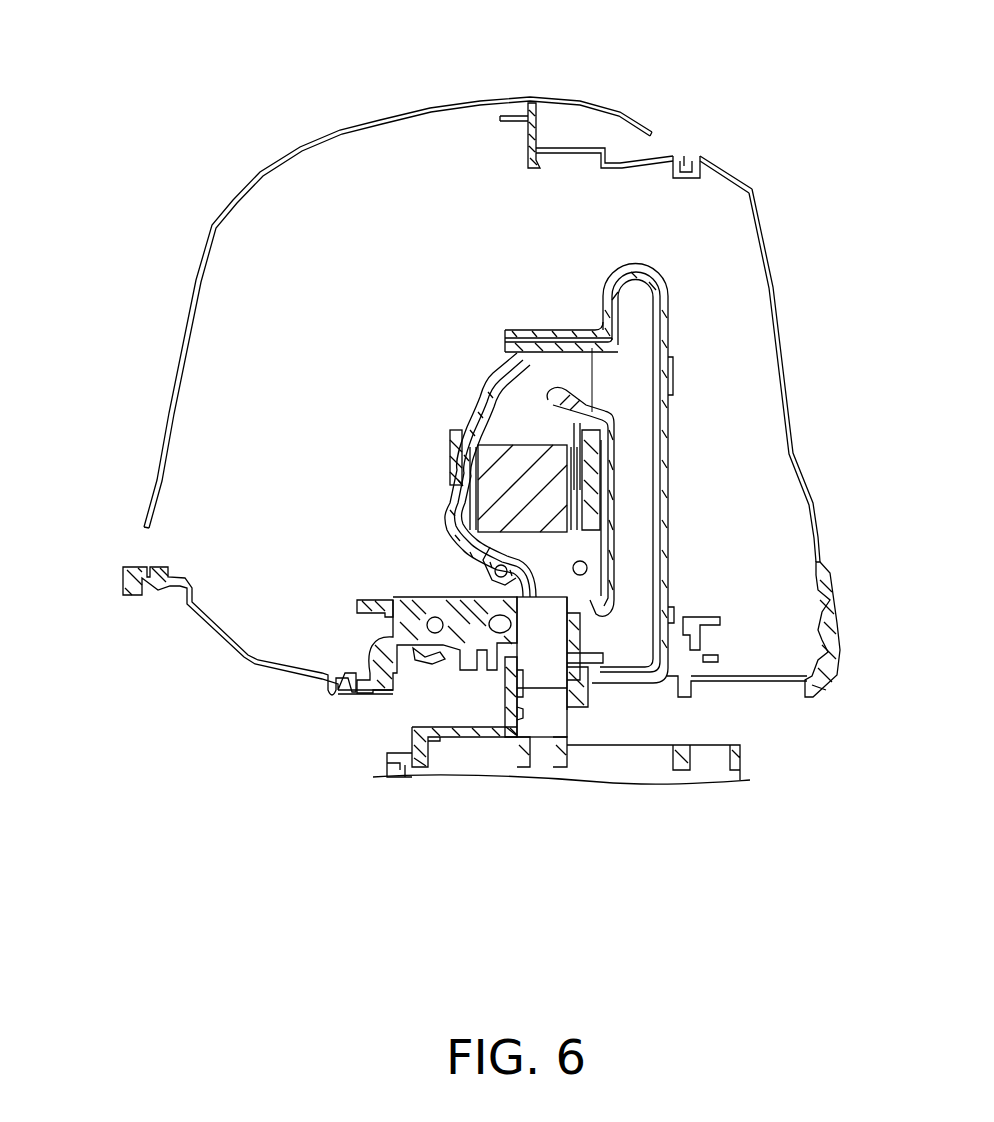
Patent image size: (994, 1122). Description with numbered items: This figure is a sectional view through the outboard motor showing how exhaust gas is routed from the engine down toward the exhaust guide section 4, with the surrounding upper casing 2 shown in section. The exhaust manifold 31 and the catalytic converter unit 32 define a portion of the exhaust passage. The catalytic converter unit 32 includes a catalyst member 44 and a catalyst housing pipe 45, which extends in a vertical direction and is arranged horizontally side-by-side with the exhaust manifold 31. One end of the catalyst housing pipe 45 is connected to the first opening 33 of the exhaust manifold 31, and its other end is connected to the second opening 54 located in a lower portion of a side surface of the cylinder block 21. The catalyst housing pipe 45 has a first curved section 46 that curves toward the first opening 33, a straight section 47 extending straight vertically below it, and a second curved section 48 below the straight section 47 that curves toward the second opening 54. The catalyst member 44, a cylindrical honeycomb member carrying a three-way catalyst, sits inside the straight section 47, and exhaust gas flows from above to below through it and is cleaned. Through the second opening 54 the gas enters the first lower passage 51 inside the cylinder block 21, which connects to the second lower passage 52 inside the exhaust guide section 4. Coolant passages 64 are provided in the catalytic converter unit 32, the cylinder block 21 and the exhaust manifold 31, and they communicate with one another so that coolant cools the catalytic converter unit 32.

The upper casing 2 is at (413, 108).
The exhaust guide section 4 is at (740, 757).
The cylinder block 21 is at (483, 653).
The exhaust manifold 31 is at (680, 418).
The catalytic converter unit 32 is at (443, 422).
The first opening 33 is at (585, 372).
The catalyst member 44 is at (462, 487).
The catalyst housing pipe 45 is at (440, 453).
The first curved section 46 is at (487, 410).
The straight section 47 is at (443, 510).
The second curved section 48 is at (480, 547).
The first lower passage 51 is at (530, 620).
The second lower passage 52 is at (540, 720).
The second opening 54 is at (533, 592).
The coolant passage 64 is at (500, 374).